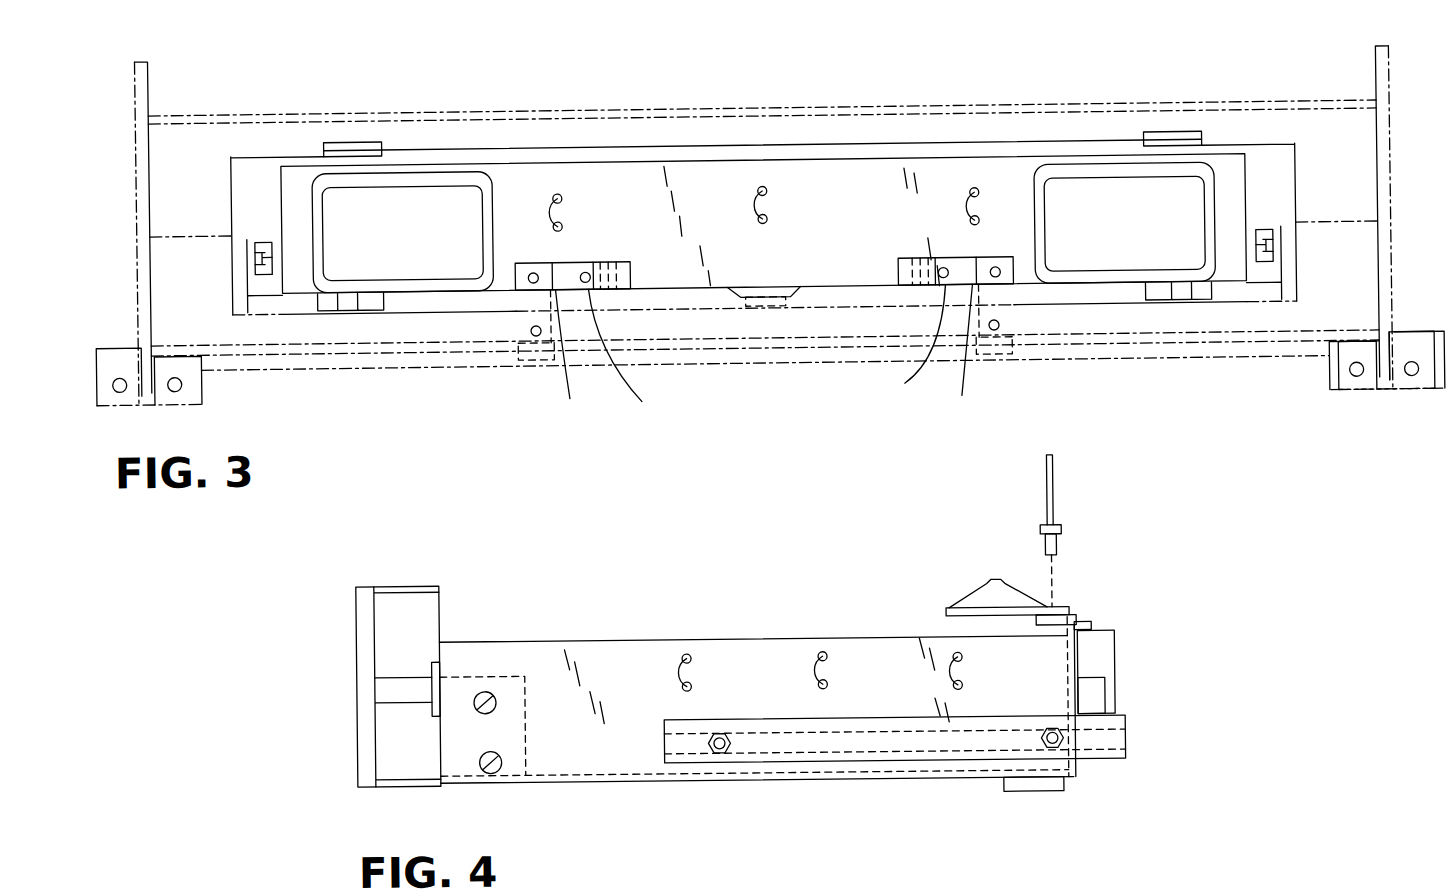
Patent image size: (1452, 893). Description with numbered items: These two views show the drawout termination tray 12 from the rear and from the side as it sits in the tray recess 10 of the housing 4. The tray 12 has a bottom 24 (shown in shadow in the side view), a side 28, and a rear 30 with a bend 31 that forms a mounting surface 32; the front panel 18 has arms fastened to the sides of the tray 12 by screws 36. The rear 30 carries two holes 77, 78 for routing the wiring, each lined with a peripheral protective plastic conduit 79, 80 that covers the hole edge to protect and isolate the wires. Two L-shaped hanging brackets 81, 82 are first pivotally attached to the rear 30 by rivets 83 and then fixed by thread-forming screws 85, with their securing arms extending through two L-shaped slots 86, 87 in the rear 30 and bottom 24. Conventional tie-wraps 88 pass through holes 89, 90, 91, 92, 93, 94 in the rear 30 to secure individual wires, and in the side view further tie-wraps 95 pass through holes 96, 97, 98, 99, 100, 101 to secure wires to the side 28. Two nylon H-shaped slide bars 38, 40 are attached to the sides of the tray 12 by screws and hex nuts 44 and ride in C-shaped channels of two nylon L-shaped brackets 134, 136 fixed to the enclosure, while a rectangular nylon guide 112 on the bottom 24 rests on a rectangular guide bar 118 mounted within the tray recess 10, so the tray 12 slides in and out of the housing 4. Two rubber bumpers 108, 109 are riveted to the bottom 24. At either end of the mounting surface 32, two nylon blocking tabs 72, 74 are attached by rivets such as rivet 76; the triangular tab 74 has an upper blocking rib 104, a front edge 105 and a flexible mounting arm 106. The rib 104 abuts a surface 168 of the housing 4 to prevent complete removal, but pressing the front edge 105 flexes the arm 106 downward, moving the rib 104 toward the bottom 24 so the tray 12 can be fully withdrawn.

In FIG. 3, the housing 4 is at (1125, 108).
In FIG. 3, the tray recess 10 is at (1267, 150).
In FIG. 3, the termination tray 12 is at (1255, 205).
In FIG. 4, the termination tray 12 is at (1060, 860).
In FIG. 4, the front panel 18 is at (400, 783).
In FIG. 4, the bottom 24 is at (820, 775).
In FIG. 4, the side 28 is at (555, 647).
In FIG. 3, the rear 30 is at (876, 168).
In FIG. 4, the rear 30 is at (1116, 666).
In FIG. 4, the bend 31 is at (1080, 618).
In FIG. 4, the mounting surface 32 is at (1055, 610).
In FIG. 4, the screws 36 is at (497, 700).
In FIG. 3, the slide bar 38 is at (1277, 223).
In FIG. 3, the slide bar 40 is at (258, 232).
In FIG. 4, the slide bar 40 is at (662, 742).
In FIG. 4, the hex nuts 44 is at (722, 752).
In FIG. 3, the blocking tab 72 is at (1203, 153).
In FIG. 3, the blocking tab 74 is at (322, 153).
In FIG. 4, the blocking tab 74 is at (960, 600).
In FIG. 4, the rivet 76 is at (1065, 530).
In FIG. 3, the hole 77 is at (450, 196).
In FIG. 3, the hole 78 is at (1078, 262).
In FIG. 3, the protective plastic conduit 79 is at (545, 162).
In FIG. 3, the protective plastic conduit 80 is at (1218, 193).
In FIG. 3, the hanging bracket 81 is at (1012, 318).
In FIG. 3, the hanging bracket 82 is at (517, 328).
In FIG. 3, the rivets 83 is at (514, 277).
In FIG. 3, the thread-forming screws 85 is at (767, 353).
In FIG. 3, the L-shaped slot 86 is at (896, 278).
In FIG. 3, the L-shaped slot 87 is at (632, 278).
In FIG. 3, the tie-wraps 88 is at (552, 214).
In FIG. 3, the hole 89 is at (565, 198).
In FIG. 3, the hole 90 is at (770, 190).
In FIG. 3, the hole 91 is at (980, 194).
In FIG. 3, the hole 92 is at (565, 224).
In FIG. 3, the hole 93 is at (770, 219).
In FIG. 3, the hole 94 is at (980, 223).
In FIG. 4, the tie-wraps 95 is at (680, 676).
In FIG. 4, the hole 96 is at (690, 658).
In FIG. 4, the hole 97 is at (823, 655).
In FIG. 4, the hole 98 is at (963, 657).
In FIG. 4, the hole 99 is at (690, 686).
In FIG. 4, the hole 100 is at (828, 686).
In FIG. 4, the hole 101 is at (963, 687).
In FIG. 3, the upper blocking rib 104 is at (383, 143).
In FIG. 4, the upper blocking rib 104 is at (994, 583).
In FIG. 4, the front edge 105 is at (948, 612).
In FIG. 4, the flexible mounting arm 106 is at (1012, 606).
In FIG. 3, the rubber bumper 108 is at (1183, 300).
In FIG. 3, the rubber bumper 109 is at (337, 306).
In FIG. 4, the rubber bumper 109 is at (1040, 787).
In FIG. 3, the nylon guide 112 is at (758, 288).
In FIG. 3, the guide bar 118 is at (765, 297).
In FIG. 3, the L-shaped bracket 134 is at (1293, 283).
In FIG. 3, the L-shaped bracket 136 is at (233, 262).
In FIG. 3, the surface 168 is at (693, 128).